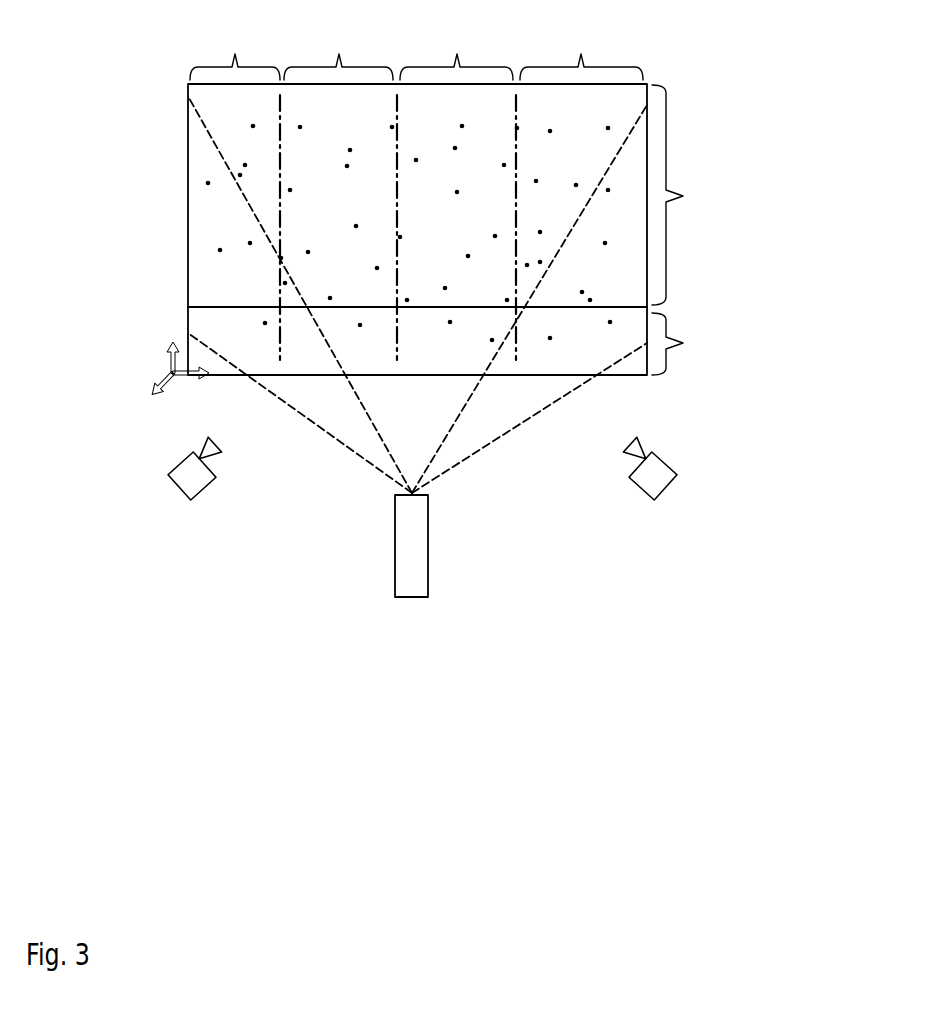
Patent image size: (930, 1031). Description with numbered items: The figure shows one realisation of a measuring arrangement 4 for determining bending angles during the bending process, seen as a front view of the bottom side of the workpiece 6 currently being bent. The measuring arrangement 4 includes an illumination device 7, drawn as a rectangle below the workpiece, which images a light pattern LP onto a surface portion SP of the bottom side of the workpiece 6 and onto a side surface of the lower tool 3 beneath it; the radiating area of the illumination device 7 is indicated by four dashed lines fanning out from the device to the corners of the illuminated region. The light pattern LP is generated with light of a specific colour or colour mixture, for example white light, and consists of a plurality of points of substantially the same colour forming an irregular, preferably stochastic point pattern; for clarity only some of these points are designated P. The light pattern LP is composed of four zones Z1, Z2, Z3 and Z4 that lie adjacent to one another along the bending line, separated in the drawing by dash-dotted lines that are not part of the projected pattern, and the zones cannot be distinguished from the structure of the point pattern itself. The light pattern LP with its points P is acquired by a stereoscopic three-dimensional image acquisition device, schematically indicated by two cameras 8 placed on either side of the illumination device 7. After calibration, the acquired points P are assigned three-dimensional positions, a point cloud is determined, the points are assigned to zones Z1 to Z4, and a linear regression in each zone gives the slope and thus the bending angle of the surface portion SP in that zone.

The lower tool 3 is at (448, 341).
The measuring arrangement 4 is at (465, 343).
The workpiece 6 is at (464, 195).
The surface portion SP is at (464, 195).
The illumination device 7 is at (412, 597).
The camera 8 is at (176, 489).
The light pattern LP is at (208, 218).
The point P is at (308, 251).
The zone Z1 is at (235, 49).
The zone Z2 is at (336, 188).
The zone Z3 is at (455, 189).
The zone Z4 is at (579, 189).